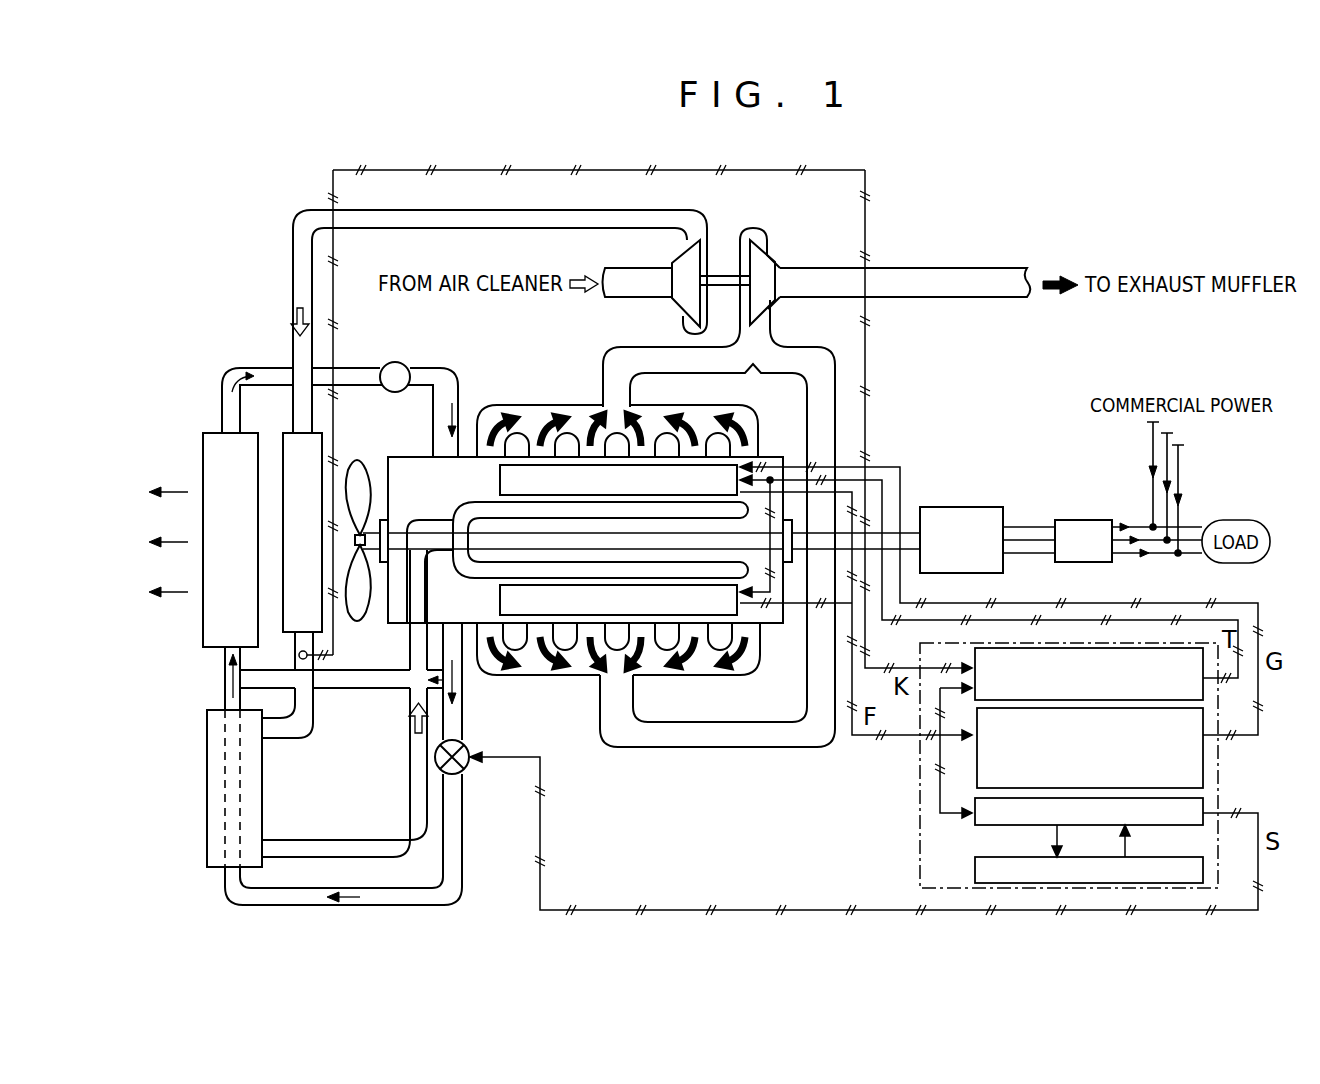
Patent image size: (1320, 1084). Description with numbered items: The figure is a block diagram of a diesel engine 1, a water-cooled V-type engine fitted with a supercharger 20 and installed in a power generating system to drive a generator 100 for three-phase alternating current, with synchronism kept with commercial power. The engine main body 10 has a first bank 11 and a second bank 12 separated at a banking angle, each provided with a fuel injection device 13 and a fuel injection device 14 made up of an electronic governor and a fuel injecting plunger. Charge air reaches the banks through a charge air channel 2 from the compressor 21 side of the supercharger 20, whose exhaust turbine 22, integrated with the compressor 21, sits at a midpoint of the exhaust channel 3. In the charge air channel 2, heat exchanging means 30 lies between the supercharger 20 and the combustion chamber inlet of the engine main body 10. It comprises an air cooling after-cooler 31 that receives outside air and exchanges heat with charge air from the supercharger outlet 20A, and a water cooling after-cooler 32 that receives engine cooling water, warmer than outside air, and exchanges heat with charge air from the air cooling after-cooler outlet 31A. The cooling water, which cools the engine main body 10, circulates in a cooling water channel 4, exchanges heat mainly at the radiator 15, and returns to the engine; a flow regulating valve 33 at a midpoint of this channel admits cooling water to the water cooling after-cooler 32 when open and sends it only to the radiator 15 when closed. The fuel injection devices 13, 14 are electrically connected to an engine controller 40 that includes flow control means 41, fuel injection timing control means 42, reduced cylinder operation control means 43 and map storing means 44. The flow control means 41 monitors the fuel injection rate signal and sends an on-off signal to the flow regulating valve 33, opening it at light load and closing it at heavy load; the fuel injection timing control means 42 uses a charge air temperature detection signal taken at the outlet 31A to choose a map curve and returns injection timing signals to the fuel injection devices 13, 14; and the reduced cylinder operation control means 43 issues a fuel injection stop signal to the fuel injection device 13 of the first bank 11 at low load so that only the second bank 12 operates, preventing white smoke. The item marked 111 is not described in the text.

The diesel engine 1 is at (1041, 244).
The charge air channel 2 is at (293, 702).
The exhaust channel 3 is at (805, 352).
The cooling water channel 4 is at (457, 715).
The engine main body 10 is at (633, 544).
The first bank 11 is at (773, 460).
The second bank 12 is at (772, 618).
The fuel injection device 13 is at (720, 457).
The fuel injection device 14 is at (718, 612).
The radiator 15 is at (205, 448).
The supercharger 20 is at (818, 258).
The supercharger outlet 20A is at (660, 215).
The compressor 21 is at (702, 258).
The exhaust turbine 22 is at (760, 257).
The heat exchanging means 30 is at (307, 612).
The air cooling after-cooler 31 is at (315, 452).
The air cooling after-cooler outlet 31A is at (312, 636).
The water cooling after-cooler 32 is at (207, 772).
The flow regulating valve 33 is at (467, 770).
The engine controller 40 is at (1058, 765).
The flow control means 41 is at (1205, 805).
The fuel injection timing control means 42 is at (1205, 690).
The reduced cylinder operation control means 43 is at (1205, 746).
The map storing means 44 is at (1205, 861).
The generator 100 is at (955, 510).
The power converter 111 is at (1085, 522).